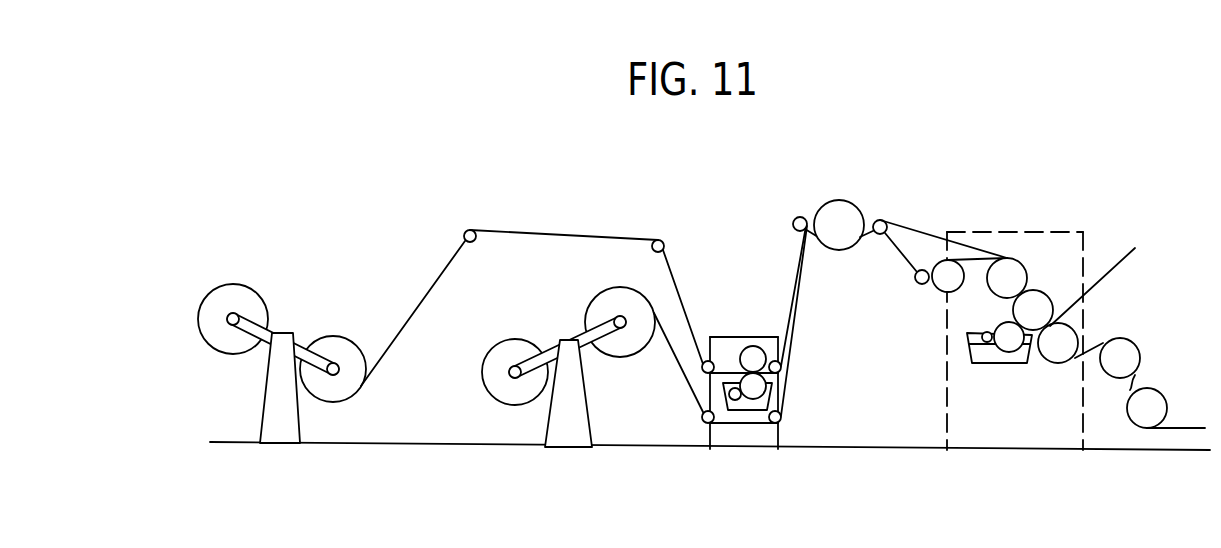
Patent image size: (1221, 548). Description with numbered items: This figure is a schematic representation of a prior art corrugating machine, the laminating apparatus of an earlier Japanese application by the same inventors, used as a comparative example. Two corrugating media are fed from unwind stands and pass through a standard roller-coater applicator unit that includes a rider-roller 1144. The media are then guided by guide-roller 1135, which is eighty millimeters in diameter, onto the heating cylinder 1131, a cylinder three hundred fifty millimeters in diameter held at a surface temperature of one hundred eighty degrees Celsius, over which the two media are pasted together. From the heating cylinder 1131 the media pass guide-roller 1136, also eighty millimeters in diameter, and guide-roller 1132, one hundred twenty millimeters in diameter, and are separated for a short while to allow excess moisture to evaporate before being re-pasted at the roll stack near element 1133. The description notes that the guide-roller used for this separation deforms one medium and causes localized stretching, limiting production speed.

The heating cylinder 1131 is at (843, 208).
The guide-roller 1132 is at (920, 285).
The applicator roll 1133 is at (955, 282).
The guide-roller 1135 is at (800, 217).
The guide-roller 1136 is at (880, 219).
The rider-roller 1144 is at (752, 352).